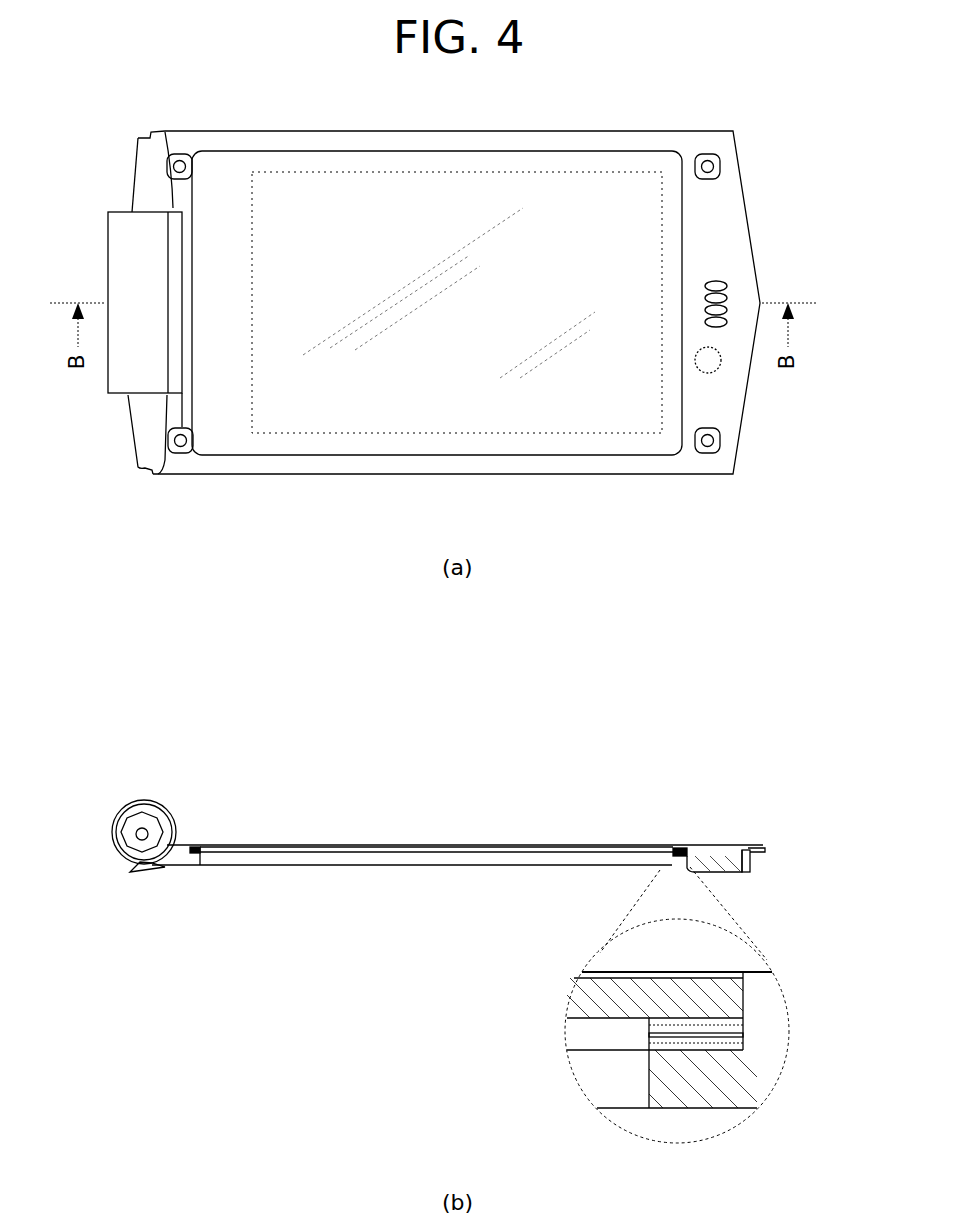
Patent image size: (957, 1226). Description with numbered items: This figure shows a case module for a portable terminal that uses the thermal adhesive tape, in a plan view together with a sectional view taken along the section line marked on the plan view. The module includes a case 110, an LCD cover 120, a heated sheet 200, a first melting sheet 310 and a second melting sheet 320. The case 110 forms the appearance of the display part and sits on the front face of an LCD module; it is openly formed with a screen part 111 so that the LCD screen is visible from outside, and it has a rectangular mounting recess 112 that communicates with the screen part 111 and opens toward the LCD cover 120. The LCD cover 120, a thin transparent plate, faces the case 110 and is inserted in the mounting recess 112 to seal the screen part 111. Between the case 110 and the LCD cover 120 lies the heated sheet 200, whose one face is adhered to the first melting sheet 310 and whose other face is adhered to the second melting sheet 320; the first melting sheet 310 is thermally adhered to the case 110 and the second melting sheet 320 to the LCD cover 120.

The case 110 is at (723, 200).
The screen part 111 is at (613, 1070).
The mounting recess 112 is at (633, 972).
The LCD cover 120 is at (625, 248).
The heated sheet 200 is at (735, 1027).
The first melting sheet 310 is at (723, 1045).
The second melting sheet 320 is at (723, 1018).